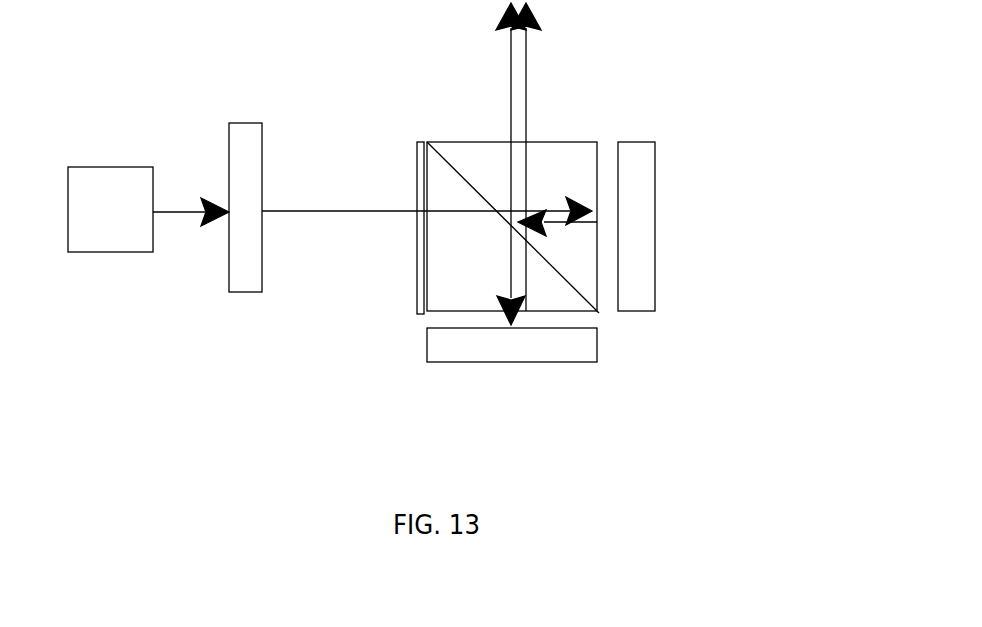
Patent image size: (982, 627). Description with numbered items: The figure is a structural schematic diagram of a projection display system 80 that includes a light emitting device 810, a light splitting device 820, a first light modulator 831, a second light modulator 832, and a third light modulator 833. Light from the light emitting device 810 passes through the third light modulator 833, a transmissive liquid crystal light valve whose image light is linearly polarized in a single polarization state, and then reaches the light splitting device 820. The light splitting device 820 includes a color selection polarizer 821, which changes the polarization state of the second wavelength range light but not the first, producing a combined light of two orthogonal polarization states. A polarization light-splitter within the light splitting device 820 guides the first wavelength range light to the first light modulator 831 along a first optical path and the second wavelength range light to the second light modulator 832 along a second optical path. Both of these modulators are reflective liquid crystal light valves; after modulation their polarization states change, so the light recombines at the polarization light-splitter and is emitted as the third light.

The projection display system 80 is at (388, 432).
The light emitting device 810 is at (113, 194).
The light splitting device 820 is at (442, 140).
The color selection polarizer 821 is at (415, 286).
The first light modulator 831 is at (547, 362).
The second light modulator 832 is at (638, 225).
The third light modulator 833 is at (240, 157).